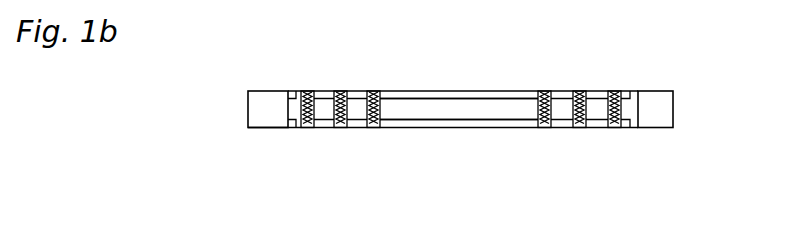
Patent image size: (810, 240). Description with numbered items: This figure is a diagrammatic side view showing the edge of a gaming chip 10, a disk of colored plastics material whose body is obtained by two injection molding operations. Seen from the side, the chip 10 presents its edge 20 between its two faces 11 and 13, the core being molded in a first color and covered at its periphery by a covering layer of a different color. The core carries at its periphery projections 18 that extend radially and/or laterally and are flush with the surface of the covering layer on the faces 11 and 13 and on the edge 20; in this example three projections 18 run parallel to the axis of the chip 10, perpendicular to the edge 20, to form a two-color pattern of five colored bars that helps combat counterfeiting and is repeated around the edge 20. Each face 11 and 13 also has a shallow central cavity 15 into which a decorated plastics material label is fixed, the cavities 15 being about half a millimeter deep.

The gaming chip 10 is at (533, 45).
The face 11 is at (271, 82).
The face 13 is at (271, 137).
The shallow central cavity 15 is at (465, 91).
The projections 18 is at (615, 128).
The edge 20 is at (673, 103).